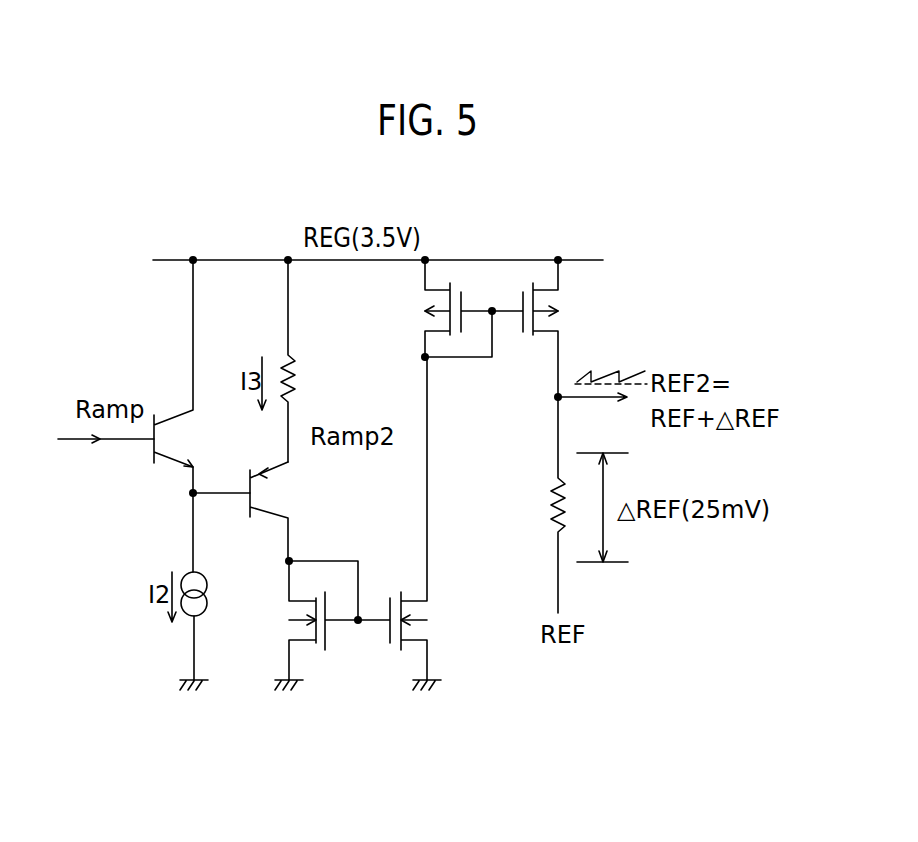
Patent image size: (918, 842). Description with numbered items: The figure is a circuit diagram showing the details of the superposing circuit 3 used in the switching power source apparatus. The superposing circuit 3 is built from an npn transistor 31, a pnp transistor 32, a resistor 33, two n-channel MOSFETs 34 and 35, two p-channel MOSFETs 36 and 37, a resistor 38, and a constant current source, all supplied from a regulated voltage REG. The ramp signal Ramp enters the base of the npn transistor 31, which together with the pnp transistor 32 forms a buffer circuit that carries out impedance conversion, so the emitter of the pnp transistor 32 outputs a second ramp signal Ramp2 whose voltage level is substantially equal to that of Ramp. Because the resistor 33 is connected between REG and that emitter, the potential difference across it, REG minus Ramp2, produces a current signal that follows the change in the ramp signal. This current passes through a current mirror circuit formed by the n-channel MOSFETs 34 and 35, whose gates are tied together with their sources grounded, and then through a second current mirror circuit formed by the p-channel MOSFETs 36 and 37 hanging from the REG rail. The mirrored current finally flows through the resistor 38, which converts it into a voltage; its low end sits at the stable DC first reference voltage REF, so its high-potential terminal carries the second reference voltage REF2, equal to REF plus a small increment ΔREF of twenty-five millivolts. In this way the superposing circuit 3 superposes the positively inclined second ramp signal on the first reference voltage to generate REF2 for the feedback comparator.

The superposing circuit 3 is at (648, 260).
The npn transistor 31 is at (185, 447).
The pnp transistor 32 is at (283, 510).
The resistor 33 is at (300, 385).
The n-channel MOSFET 34 is at (292, 612).
The n-channel MOSFET 35 is at (432, 614).
The p-channel MOSFET 36 is at (423, 296).
The p-channel MOSFET 37 is at (565, 318).
The resistor 38 is at (548, 497).